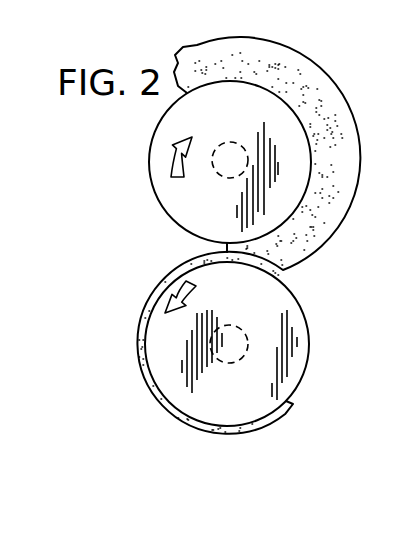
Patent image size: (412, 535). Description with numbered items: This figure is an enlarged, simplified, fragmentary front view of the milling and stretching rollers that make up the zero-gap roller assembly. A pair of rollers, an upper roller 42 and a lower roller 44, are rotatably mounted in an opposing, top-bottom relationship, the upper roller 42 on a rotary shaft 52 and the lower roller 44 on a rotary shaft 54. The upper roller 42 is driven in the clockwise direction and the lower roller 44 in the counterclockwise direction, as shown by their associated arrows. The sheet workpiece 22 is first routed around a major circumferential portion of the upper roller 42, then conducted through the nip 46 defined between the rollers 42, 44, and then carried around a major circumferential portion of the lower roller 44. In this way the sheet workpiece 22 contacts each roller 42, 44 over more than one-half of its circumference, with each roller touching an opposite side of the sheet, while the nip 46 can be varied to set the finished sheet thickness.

The sheet workpiece 22 is at (303, 80).
The upper roller 42 is at (158, 164).
The lower roller 44 is at (300, 348).
The nip 46 is at (222, 246).
The rotary shaft 52 is at (229, 141).
The rotary shaft 54 is at (239, 328).